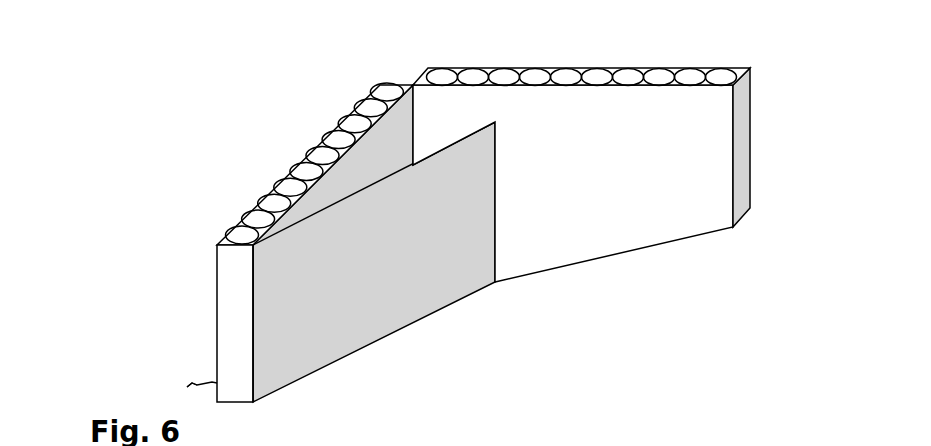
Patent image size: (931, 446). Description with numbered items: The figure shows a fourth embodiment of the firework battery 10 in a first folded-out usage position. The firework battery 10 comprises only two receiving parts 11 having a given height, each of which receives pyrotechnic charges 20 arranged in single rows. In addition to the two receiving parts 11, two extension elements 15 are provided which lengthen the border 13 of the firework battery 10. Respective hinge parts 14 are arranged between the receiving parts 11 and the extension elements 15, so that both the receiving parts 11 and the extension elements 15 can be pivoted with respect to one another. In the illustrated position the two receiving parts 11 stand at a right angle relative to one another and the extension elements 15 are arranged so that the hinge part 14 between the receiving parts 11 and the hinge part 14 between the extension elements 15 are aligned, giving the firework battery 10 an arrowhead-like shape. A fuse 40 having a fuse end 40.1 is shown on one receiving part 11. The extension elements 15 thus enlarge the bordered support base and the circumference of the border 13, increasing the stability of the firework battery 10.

The firework battery 10 is at (206, 99).
The receiving part 11 is at (353, 110).
The pyrotechnic charge 20 is at (322, 150).
The border 13 is at (232, 272).
The hinge part 14 is at (253, 363).
The extension element 15 is at (390, 274).
The fuse 40 is at (207, 382).
The fuse end 40.1 is at (188, 387).